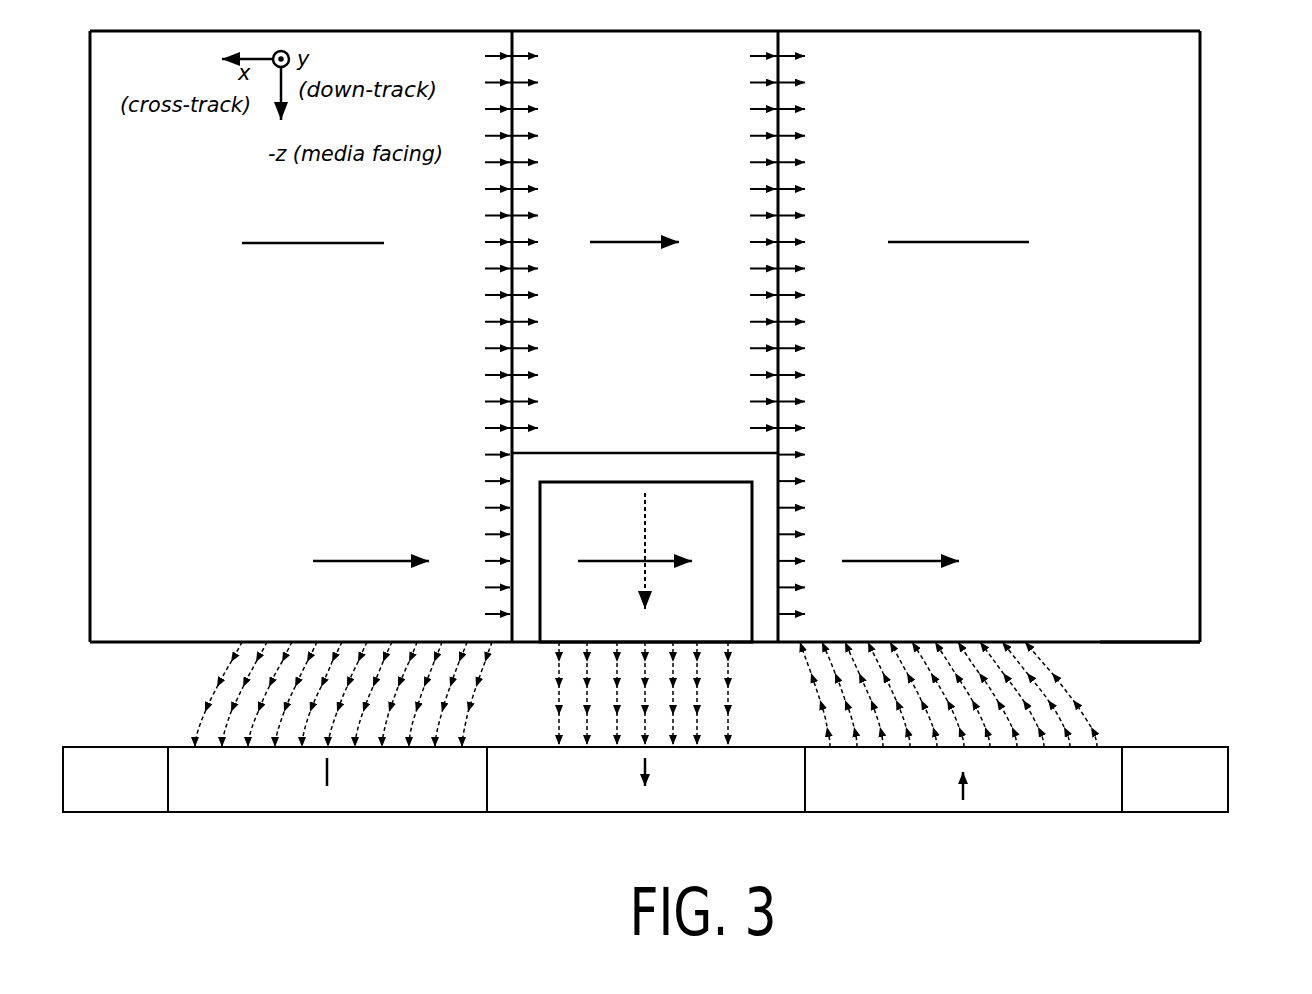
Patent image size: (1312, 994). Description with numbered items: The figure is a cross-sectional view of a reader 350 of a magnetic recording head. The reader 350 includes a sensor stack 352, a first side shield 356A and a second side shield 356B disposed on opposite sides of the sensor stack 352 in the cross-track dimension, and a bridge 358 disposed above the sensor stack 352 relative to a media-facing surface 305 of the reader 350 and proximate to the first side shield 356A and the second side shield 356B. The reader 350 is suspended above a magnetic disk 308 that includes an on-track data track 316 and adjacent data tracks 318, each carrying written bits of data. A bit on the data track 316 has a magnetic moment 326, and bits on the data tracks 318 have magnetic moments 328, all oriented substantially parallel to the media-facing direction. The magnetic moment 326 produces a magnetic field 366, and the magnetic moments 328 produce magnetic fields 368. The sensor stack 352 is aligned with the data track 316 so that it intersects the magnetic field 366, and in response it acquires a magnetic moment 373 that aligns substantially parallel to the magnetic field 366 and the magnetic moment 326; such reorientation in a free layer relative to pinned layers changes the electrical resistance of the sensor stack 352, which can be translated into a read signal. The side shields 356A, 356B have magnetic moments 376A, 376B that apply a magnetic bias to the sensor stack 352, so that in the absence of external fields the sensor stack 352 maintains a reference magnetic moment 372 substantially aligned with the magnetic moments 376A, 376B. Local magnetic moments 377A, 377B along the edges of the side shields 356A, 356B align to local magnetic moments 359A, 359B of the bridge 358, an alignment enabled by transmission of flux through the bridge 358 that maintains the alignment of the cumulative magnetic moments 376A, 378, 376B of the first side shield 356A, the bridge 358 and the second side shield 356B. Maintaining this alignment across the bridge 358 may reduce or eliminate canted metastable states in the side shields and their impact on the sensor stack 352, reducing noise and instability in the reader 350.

The reader 350 is at (1226, 58).
The media-facing surface 305 is at (1183, 645).
The magnetic disk 308 is at (132, 798).
The data tracks 318 is at (224, 792).
The data track 316 is at (545, 792).
The magnetic moment 326 is at (648, 772).
The magnetic moments 328 is at (1023, 838).
The magnetic field 366 is at (738, 723).
The magnetic fields 368 is at (1102, 712).
The sensor stack 352 is at (560, 525).
The bridge 358 is at (622, 395).
The first side shield 356A is at (268, 442).
The second side shield 356B is at (958, 442).
The local magnetic moment 359A is at (552, 265).
The local magnetic moment 359B is at (737, 265).
The magnetic moment 372 is at (667, 562).
The magnetic moment 373 is at (645, 573).
The magnetic moment 376A is at (395, 596).
The magnetic moment 376B is at (940, 596).
The local magnetic moment 377A is at (463, 302).
The local magnetic moment 377B is at (820, 298).
The magnetic moment 378 is at (650, 241).